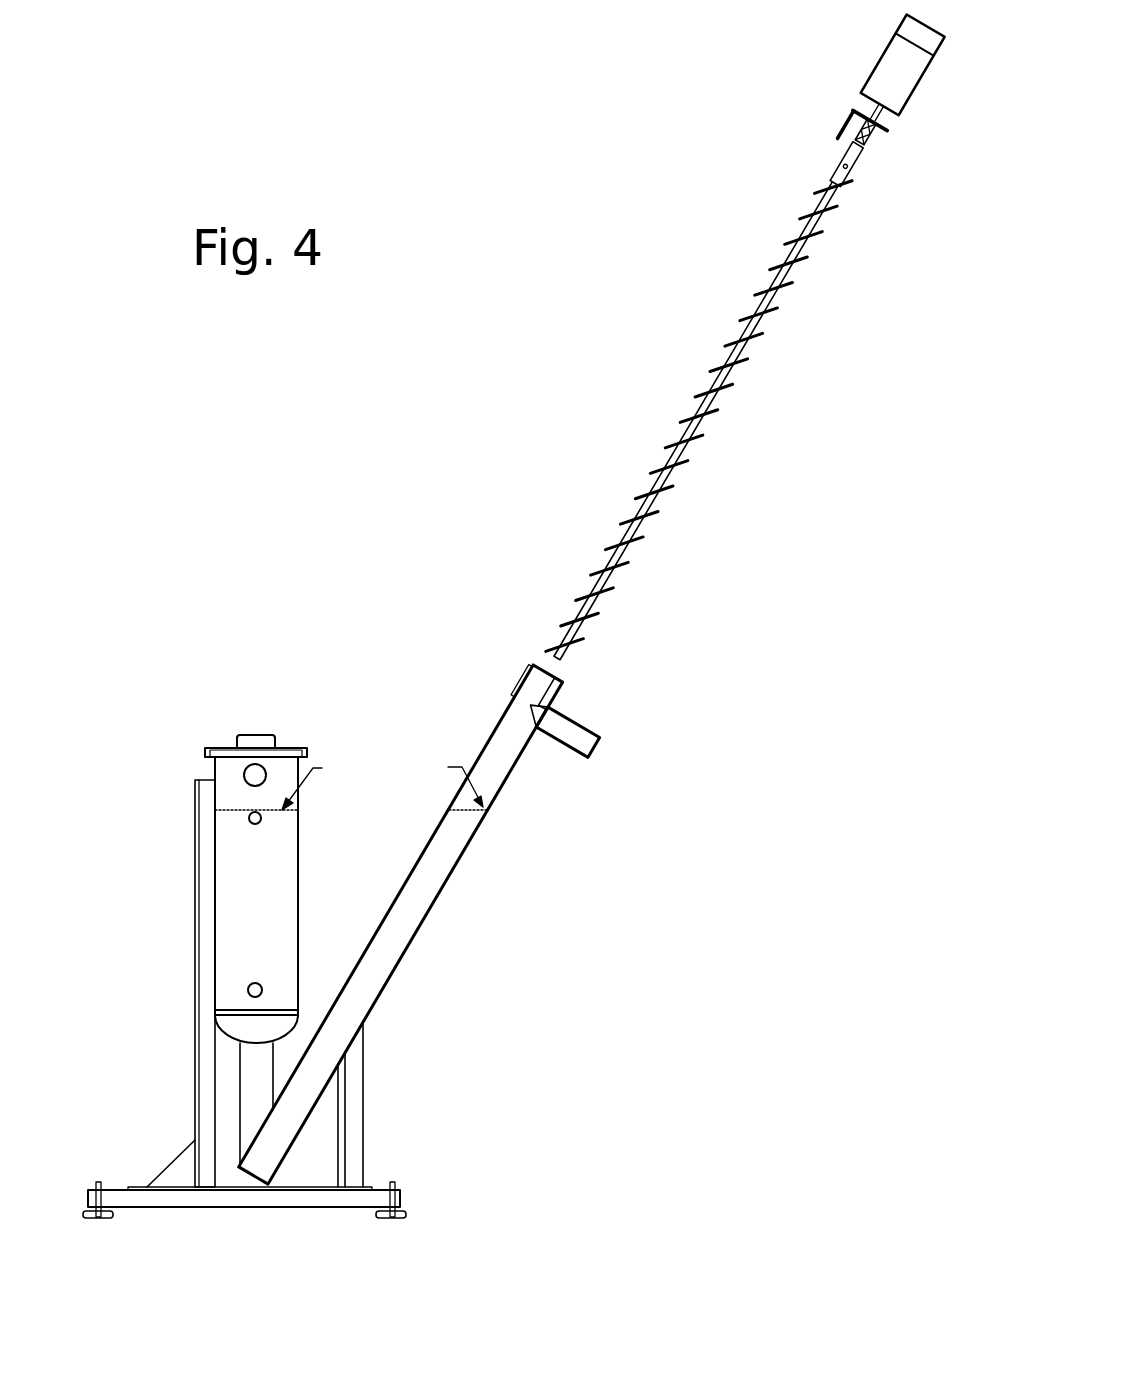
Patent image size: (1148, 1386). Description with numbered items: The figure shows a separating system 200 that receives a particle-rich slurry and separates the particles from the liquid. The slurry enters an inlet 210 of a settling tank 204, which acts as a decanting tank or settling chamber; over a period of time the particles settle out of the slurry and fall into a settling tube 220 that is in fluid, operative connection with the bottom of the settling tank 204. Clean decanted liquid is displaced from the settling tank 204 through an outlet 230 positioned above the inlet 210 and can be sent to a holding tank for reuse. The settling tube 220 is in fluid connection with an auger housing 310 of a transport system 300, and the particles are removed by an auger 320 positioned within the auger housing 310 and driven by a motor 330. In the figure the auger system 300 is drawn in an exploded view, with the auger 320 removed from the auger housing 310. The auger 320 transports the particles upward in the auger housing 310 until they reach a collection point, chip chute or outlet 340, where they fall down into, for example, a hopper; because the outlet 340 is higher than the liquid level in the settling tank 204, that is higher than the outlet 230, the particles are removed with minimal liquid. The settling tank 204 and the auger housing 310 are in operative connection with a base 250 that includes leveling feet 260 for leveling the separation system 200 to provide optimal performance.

The separating system 200 is at (343, 499).
The settling tank 204 is at (212, 857).
The inlet 210 is at (248, 990).
The settling tube 220 is at (235, 1080).
The outlet 230 is at (248, 818).
The base 250 is at (370, 1188).
The leveling feet 260 is at (413, 1217).
The transport system 300 is at (512, 627).
The auger housing 310 is at (413, 940).
The auger 320 is at (685, 463).
The motor 330 is at (868, 63).
The outlet 340 is at (603, 744).